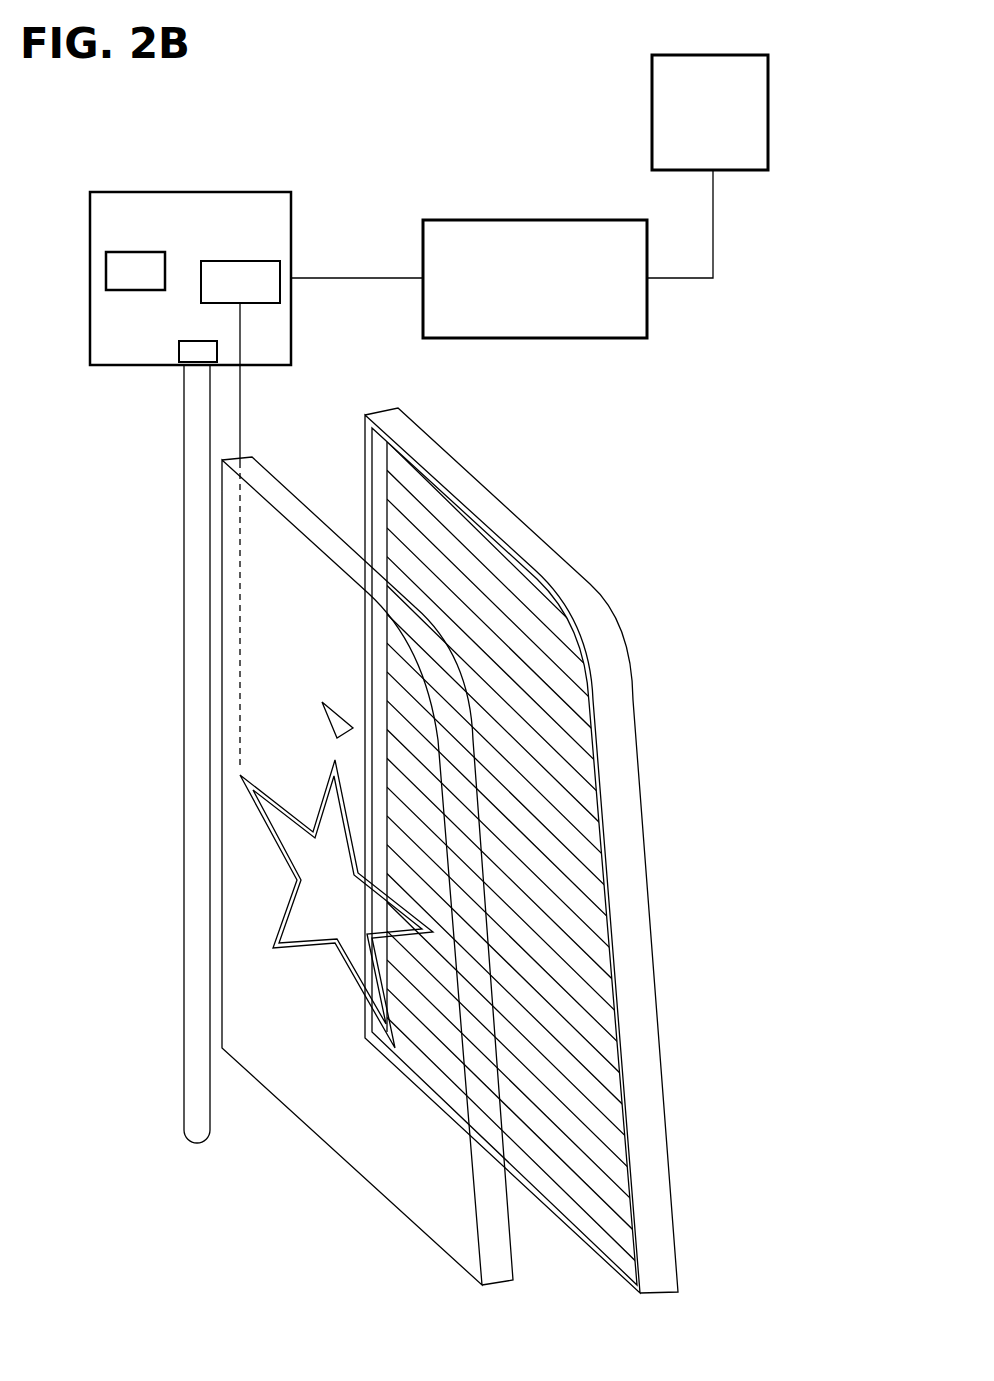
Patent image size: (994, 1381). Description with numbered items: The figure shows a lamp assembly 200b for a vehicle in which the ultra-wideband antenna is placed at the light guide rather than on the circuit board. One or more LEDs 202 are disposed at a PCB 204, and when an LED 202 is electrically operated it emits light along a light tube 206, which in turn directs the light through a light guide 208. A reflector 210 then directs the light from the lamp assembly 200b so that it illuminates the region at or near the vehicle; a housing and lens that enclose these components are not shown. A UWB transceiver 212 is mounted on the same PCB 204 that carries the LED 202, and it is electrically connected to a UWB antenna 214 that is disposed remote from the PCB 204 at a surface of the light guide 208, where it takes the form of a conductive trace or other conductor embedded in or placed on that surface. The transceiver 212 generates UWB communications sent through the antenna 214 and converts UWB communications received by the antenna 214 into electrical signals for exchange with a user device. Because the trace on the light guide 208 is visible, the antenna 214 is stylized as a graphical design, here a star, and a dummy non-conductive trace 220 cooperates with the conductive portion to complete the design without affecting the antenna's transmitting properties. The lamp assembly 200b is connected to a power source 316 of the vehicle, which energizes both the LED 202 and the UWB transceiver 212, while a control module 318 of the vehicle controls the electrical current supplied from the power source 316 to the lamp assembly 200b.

The control module 318 is at (740, 55).
The power source 316 is at (480, 220).
The PCB 204 is at (252, 192).
The UWB transceiver 212 is at (139, 252).
The LED 202 is at (217, 351).
The light tube 206 is at (184, 1127).
The light guide 208 is at (325, 1147).
The reflector 210 is at (633, 733).
The lamp assembly 200b is at (585, 472).
The UWB antenna 214 is at (333, 707).
The non-conductive trace 220 is at (321, 953).